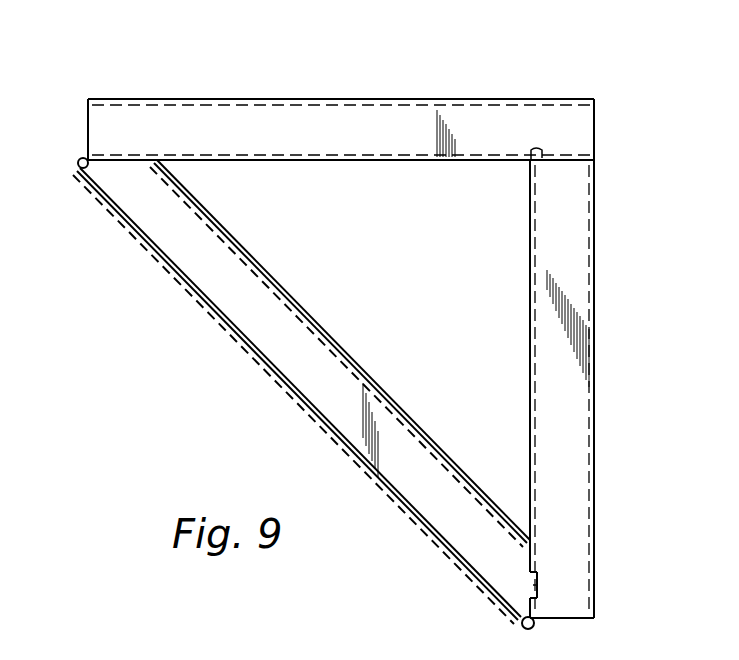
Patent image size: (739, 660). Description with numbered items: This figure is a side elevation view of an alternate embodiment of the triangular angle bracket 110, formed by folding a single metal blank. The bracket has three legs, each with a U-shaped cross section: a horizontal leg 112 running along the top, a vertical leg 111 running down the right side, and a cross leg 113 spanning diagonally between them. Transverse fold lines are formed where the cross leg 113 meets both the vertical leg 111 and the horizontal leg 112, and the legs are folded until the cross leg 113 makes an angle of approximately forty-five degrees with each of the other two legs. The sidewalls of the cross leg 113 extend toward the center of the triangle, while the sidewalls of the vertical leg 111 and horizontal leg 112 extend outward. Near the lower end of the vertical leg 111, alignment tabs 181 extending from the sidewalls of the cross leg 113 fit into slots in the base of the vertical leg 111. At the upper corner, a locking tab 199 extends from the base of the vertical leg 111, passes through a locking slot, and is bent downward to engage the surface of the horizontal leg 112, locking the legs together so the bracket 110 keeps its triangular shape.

The triangular angle bracket 110 is at (185, 297).
The vertical leg 111 is at (595, 388).
The horizontal leg 112 is at (262, 98).
The cross leg 113 is at (273, 370).
The alignment tabs 181 is at (540, 587).
The locking tab 199 is at (540, 152).